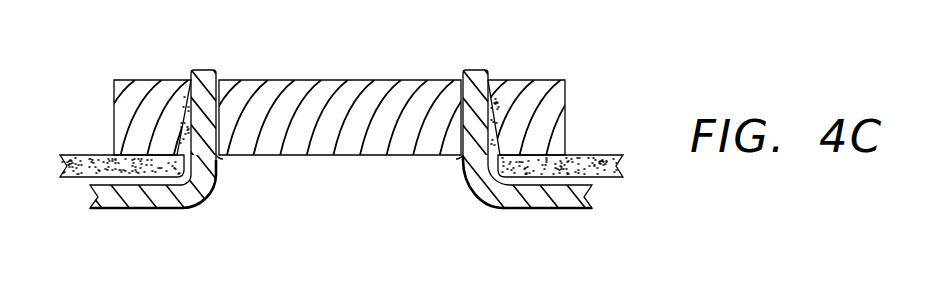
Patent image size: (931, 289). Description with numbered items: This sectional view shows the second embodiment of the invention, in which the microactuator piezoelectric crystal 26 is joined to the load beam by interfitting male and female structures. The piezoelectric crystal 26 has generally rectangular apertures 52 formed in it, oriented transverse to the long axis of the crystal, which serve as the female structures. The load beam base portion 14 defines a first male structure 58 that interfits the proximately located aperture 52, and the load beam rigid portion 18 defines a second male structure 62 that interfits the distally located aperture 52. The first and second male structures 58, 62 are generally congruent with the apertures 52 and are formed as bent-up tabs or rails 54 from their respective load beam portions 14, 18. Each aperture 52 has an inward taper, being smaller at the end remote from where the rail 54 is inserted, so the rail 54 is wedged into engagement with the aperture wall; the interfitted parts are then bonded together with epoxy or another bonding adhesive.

The load beam base portion 14 is at (546, 209).
The load beam rigid portion 18 is at (140, 209).
The piezoelectric crystal 26 is at (113, 103).
The aperture 52 is at (550, 108).
The tab or rail 54 is at (218, 156).
The first male structure 58 is at (476, 70).
The second male structure 62 is at (205, 68).